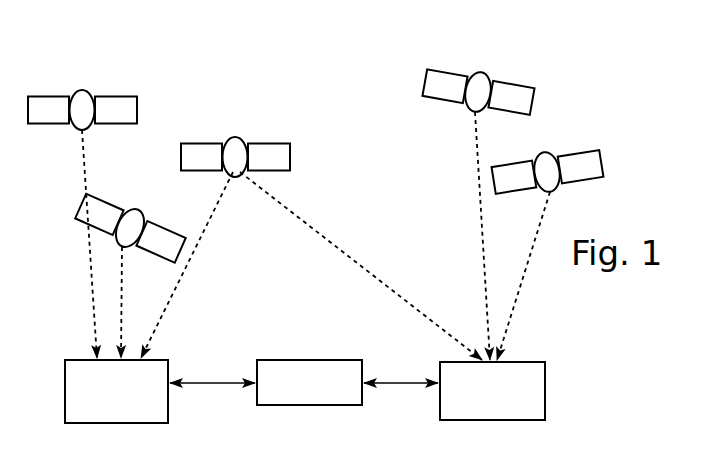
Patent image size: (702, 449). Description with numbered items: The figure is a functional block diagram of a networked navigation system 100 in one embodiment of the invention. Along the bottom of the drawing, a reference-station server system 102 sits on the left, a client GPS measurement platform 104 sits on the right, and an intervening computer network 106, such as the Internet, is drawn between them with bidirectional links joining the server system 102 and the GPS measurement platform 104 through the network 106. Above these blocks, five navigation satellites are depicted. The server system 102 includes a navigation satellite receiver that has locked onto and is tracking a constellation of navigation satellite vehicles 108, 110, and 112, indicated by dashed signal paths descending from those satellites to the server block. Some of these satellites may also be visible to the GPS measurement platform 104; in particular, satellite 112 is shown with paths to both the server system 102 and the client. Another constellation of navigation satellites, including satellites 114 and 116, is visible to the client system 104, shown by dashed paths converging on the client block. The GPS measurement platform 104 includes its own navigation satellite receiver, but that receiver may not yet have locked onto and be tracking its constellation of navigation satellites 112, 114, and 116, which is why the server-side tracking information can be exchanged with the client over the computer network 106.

The networked navigation system 100 is at (340, 66).
The reference-station server system 102 is at (80, 359).
The GPS measurement platform 104 is at (450, 361).
The computer network 106 is at (340, 359).
The navigation satellite vehicle 108 is at (80, 92).
The navigation satellite vehicle 110 is at (82, 214).
The navigation satellite vehicle 112 is at (233, 138).
The navigation satellite 114 is at (478, 73).
The navigation satellite 116 is at (590, 157).